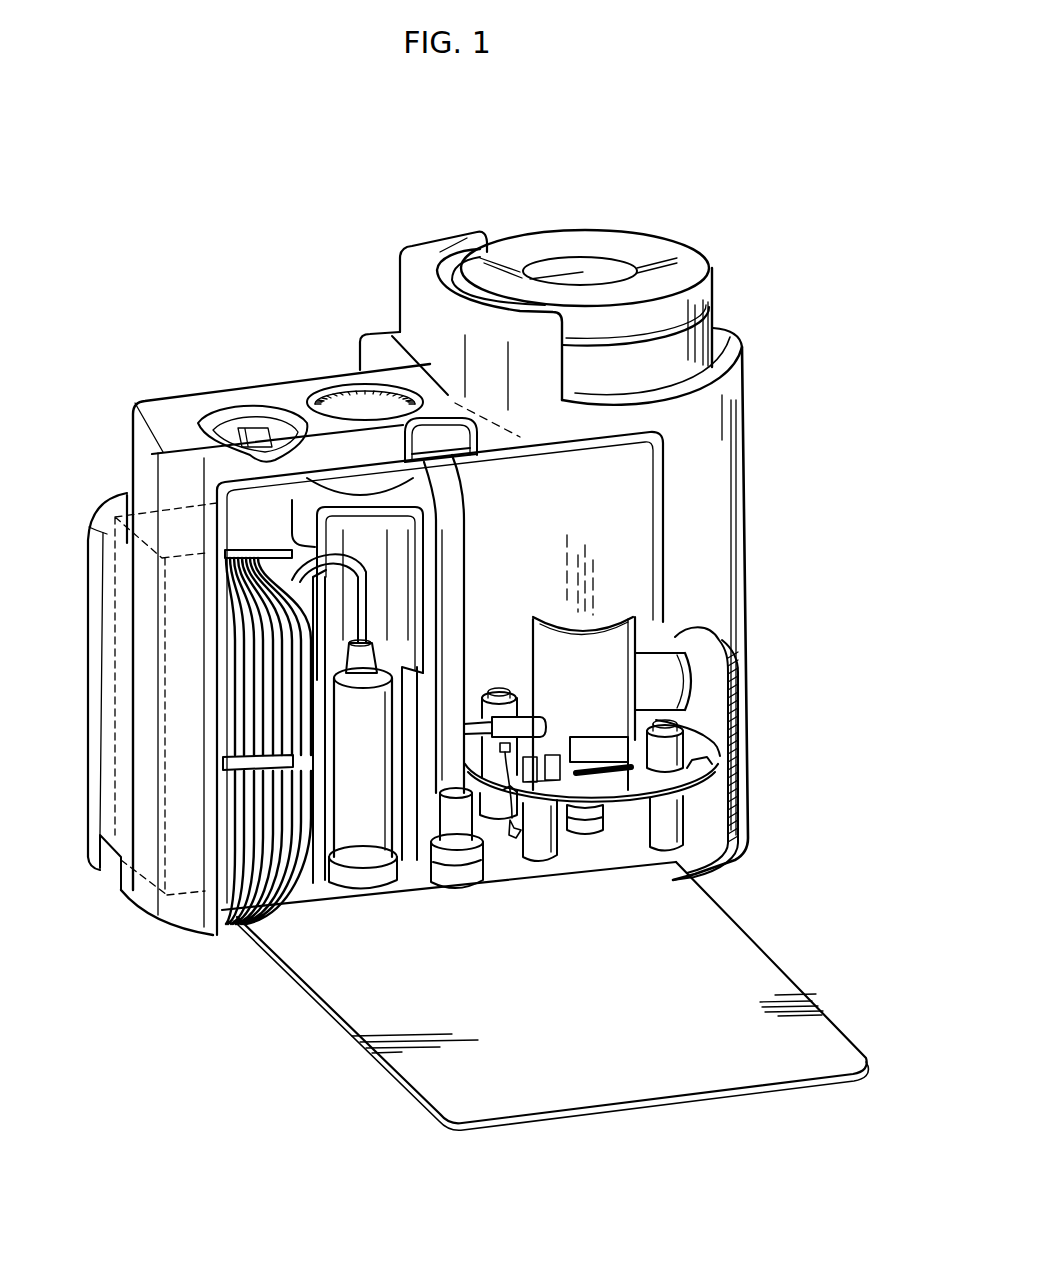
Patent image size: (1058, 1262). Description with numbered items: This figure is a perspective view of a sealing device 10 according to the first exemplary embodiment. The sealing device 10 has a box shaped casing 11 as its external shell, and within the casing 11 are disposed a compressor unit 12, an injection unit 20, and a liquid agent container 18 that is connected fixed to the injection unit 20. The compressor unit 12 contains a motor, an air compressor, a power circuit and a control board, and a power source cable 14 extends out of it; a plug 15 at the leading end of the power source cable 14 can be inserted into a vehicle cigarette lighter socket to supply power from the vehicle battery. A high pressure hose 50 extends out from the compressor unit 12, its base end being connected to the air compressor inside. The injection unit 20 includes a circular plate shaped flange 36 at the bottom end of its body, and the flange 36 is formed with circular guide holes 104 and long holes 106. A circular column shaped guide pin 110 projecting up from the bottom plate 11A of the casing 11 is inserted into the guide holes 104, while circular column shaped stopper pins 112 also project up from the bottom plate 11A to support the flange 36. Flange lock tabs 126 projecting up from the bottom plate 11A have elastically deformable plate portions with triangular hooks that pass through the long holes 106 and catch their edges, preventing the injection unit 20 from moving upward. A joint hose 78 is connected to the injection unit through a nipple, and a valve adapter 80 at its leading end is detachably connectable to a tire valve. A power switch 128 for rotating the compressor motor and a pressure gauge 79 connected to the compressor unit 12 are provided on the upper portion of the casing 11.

The sealing device 10 is at (649, 209).
The casing 11 is at (724, 470).
The bottom plate 11A is at (688, 860).
The compressor unit 12 is at (178, 498).
The power source cable 14 is at (292, 900).
The plug 15 is at (360, 846).
The liquid agent container 18 is at (694, 268).
The injection unit 20 is at (622, 650).
The flange 36 is at (607, 785).
The high pressure hose 50 is at (700, 682).
The joint hose 78 is at (455, 553).
The pressure gauge 79 is at (338, 408).
The valve adapter 80 is at (460, 823).
The guide holes 104 is at (686, 741).
The long holes 106 is at (508, 788).
The guide pin 110 is at (500, 690).
The stopper pins 112 is at (547, 850).
The flange lock tabs 126 is at (509, 843).
The power switch 128 is at (258, 430).